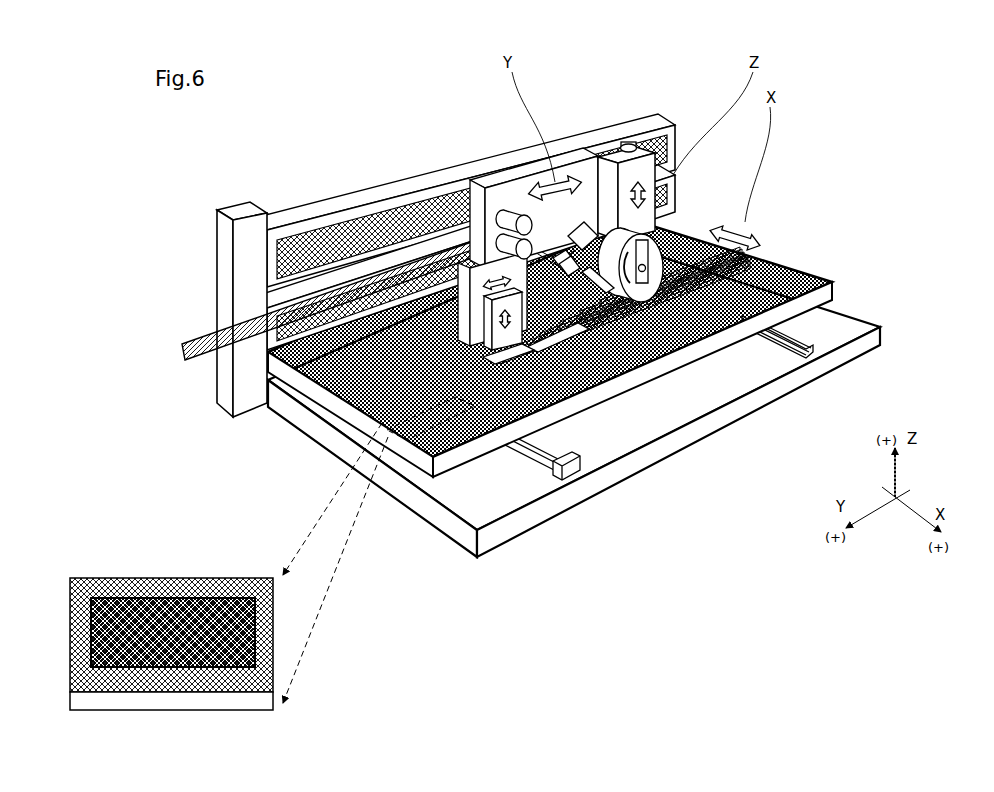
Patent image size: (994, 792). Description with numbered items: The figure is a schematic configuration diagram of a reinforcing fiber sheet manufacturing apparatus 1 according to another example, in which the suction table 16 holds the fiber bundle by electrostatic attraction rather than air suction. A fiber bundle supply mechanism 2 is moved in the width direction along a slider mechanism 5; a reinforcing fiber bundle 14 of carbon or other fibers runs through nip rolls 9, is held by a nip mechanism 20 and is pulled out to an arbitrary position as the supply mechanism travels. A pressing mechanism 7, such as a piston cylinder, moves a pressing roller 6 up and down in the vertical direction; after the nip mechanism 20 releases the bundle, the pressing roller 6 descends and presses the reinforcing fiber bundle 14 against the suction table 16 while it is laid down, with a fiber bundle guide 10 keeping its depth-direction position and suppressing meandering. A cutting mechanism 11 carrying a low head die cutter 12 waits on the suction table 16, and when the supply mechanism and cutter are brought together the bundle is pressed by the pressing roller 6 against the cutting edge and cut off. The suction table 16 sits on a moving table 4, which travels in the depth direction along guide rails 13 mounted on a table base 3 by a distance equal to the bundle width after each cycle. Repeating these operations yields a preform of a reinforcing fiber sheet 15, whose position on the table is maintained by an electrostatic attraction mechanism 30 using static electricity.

The reinforcing fiber sheet manufacturing apparatus 1 is at (694, 86).
The fiber bundle supply mechanism 2 is at (512, 193).
The table base 3 is at (847, 347).
The moving table 4 is at (780, 267).
The slider mechanism 5 is at (337, 277).
The pressing roller 6 is at (687, 230).
The pressing mechanism 7 is at (390, 273).
The nip rolls 9 is at (443, 188).
The fiber bundle guide 10 is at (637, 373).
The cutting mechanism 11 is at (365, 414).
The low head die cutter 12 is at (583, 382).
The guide rails 13 is at (567, 472).
The reinforcing fiber bundle 14 is at (182, 342).
The reinforcing fiber sheet 15 is at (692, 360).
The suction table 16 is at (787, 273).
The nip mechanism 20 is at (583, 230).
The electrostatic attraction mechanism 30 is at (88, 637).